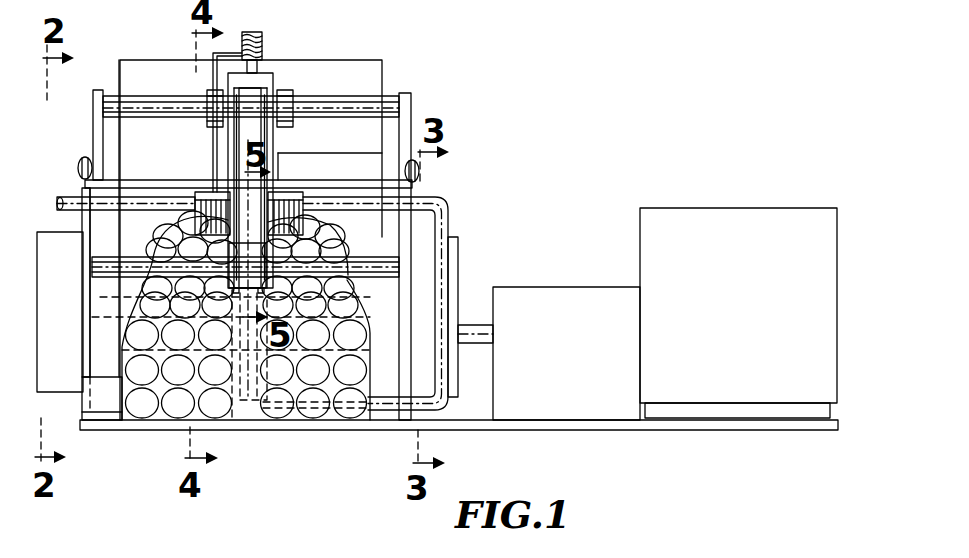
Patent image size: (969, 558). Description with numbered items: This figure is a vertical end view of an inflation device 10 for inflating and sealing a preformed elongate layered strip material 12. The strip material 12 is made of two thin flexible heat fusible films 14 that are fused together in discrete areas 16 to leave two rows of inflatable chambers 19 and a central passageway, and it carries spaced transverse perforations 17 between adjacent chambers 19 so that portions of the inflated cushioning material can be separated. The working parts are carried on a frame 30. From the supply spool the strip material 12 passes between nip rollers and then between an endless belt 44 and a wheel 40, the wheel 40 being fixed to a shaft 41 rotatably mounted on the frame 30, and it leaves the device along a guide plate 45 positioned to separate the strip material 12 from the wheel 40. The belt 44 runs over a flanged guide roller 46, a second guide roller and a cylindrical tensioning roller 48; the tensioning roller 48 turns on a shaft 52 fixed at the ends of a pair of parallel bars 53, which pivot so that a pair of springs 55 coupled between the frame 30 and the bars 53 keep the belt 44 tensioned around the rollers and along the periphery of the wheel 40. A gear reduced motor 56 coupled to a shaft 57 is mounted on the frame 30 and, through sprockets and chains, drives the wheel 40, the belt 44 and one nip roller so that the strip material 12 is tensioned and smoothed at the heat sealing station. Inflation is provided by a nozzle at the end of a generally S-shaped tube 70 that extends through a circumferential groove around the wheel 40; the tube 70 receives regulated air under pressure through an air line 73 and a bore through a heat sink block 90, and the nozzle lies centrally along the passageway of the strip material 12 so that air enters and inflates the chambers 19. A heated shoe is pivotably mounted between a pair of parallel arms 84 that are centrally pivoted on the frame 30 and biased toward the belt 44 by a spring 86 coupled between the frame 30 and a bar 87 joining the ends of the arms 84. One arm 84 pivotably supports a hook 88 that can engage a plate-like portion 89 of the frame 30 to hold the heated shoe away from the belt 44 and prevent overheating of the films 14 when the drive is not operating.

The inflation device 10 is at (420, 86).
The strip material 12 is at (147, 54).
The films 14 is at (300, 421).
The fused areas 16 is at (125, 386).
The transverse perforations 17 is at (367, 354).
The inflatable chambers 19 is at (140, 380).
The frame 30 is at (85, 242).
The wheel 40 is at (236, 421).
The shaft 41 is at (100, 305).
The endless belt 44 is at (252, 99).
The guide plate 45 is at (100, 346).
The flanged guide roller 46 is at (236, 287).
The tensioning roller 48 is at (264, 118).
The shaft 52 is at (362, 99).
The parallel bars 53 is at (96, 123).
The springs 55 is at (82, 158).
The gear reduced motor 56 is at (760, 292).
The shaft 57 is at (473, 325).
The S-shaped tube 70 is at (449, 220).
The air line 73 is at (65, 196).
The parallel arms 84 is at (228, 134).
The spring 86 is at (253, 33).
The bar 87 is at (263, 74).
The hook 88 is at (216, 151).
The plate-like portion 89 is at (141, 180).
The heat sink block 90 is at (203, 193).